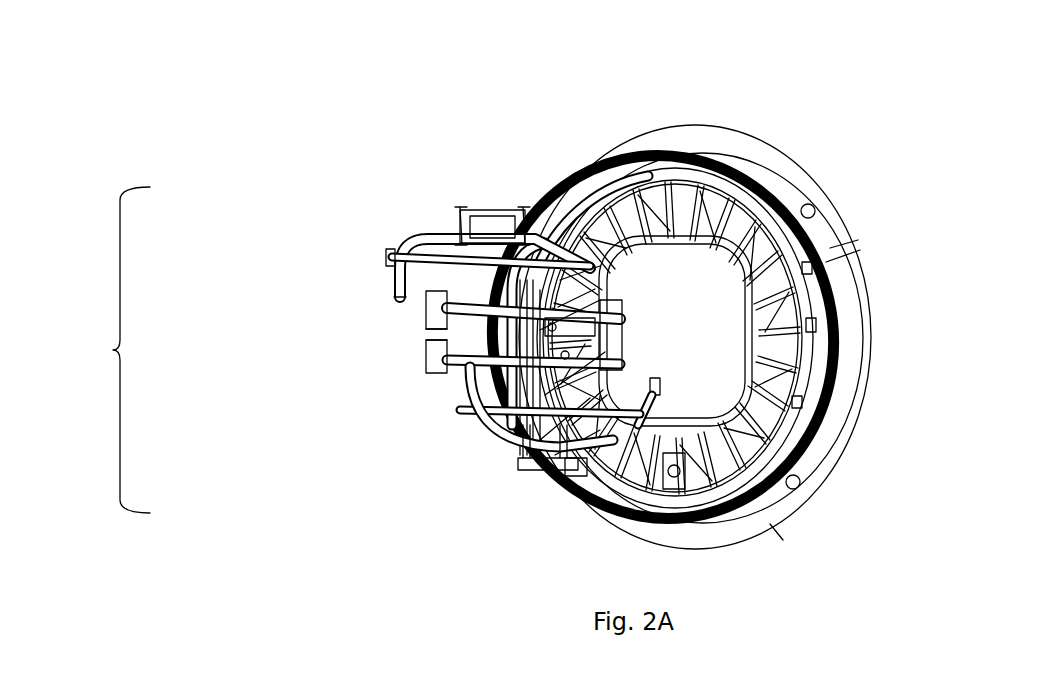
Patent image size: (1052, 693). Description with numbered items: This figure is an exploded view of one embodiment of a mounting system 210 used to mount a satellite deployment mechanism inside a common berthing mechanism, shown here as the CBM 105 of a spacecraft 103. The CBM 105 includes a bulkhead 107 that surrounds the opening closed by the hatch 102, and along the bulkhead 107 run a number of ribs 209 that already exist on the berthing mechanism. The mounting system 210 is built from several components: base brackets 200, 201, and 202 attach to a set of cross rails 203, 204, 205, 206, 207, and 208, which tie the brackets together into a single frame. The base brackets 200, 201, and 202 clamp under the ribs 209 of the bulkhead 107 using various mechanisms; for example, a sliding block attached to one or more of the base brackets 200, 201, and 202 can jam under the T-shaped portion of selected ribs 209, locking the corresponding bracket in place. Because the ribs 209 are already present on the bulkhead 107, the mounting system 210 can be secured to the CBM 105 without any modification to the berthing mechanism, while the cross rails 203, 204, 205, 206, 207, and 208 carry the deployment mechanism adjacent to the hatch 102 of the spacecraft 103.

The hatch 102 is at (675, 331).
The spacecraft 103 is at (825, 210).
The CBM 105 is at (707, 157).
The bulkhead 107 is at (575, 190).
The ribs 209 is at (633, 180).
The base bracket 200 is at (430, 248).
The base bracket 201 is at (425, 345).
The base bracket 202 is at (483, 443).
The cross rail 203 is at (492, 207).
The cross rail 204 is at (385, 255).
The cross rail 205 is at (435, 310).
The cross rail 206 is at (430, 372).
The cross rail 207 is at (480, 413).
The cross rail 208 is at (553, 477).
The mounting system 210 is at (112, 350).